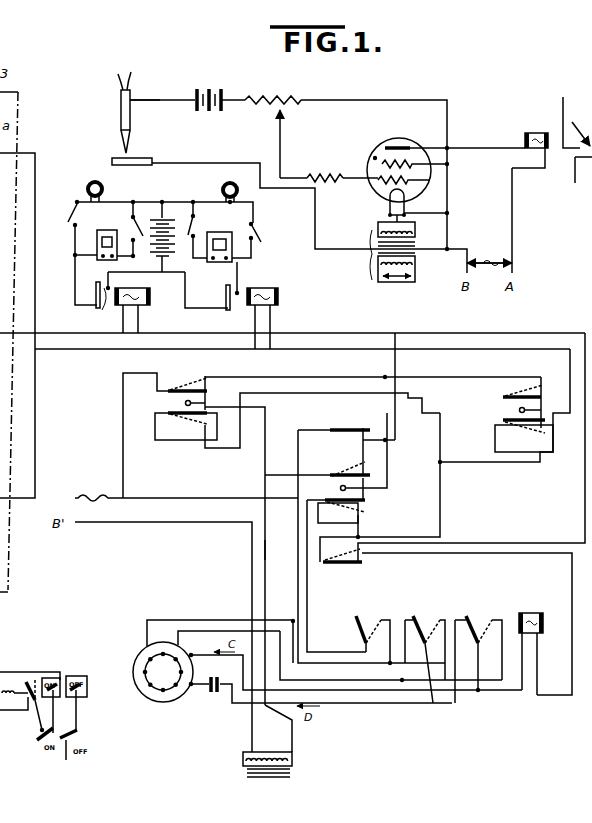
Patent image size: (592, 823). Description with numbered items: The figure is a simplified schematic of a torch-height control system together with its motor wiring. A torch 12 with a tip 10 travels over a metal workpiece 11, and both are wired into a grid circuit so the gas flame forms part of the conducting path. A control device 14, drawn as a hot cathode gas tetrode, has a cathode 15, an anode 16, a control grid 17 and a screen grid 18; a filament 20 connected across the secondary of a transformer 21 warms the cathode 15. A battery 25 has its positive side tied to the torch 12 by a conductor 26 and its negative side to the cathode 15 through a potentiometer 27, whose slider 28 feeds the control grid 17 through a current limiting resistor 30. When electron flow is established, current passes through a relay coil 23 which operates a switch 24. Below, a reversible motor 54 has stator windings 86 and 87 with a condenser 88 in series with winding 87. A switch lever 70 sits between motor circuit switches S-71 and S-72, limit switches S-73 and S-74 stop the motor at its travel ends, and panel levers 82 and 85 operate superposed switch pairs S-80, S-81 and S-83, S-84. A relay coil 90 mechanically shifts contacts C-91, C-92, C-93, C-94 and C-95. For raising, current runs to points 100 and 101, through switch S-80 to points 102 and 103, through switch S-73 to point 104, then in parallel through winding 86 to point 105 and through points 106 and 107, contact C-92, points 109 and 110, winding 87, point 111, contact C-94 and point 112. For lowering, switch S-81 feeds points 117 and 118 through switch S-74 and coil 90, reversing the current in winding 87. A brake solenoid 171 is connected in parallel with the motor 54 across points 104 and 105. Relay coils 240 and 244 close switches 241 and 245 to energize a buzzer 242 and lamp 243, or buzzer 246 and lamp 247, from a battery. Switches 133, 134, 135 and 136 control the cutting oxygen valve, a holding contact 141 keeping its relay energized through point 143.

In FIG. 1, the torch tip 10 is at (129, 148).
In FIG. 1, the workpiece 11 is at (124, 166).
In FIG. 1, the torch 12 is at (121, 118).
In FIG. 1, the control device 14 is at (380, 146).
In FIG. 1, the cathode 15 is at (388, 193).
In FIG. 1, the anode 16 is at (404, 146).
In FIG. 1, the control grid 17 is at (430, 181).
In FIG. 1, the screen grid 18 is at (380, 164).
In FIG. 1, the filament 20 is at (387, 206).
In FIG. 1, the transformer 21 is at (380, 252).
In FIG. 1, the relay coil 23 is at (535, 132).
In FIG. 1, the switch 24 is at (575, 126).
In FIG. 1, the battery 25 is at (205, 112).
In FIG. 1, the conductor 26 is at (153, 99).
In FIG. 1, the potentiometer 27 is at (256, 106).
In FIG. 1, the slider 28 is at (284, 116).
In FIG. 1, the current limiting resistor 30 is at (320, 167).
In FIG. 1, the motor 54 is at (152, 700).
In FIG. 1, the switch lever 70 is at (340, 488).
In FIG. 1, the lever 82 is at (185, 404).
In FIG. 1, the lever 85 is at (519, 410).
In FIG. 1, the stator winding 86 is at (162, 642).
In FIG. 1, the stator winding 87 is at (355, 663).
In FIG. 1, the condenser 88 is at (207, 693).
In FIG. 1, the electro-magnetic coil 90 is at (531, 612).
In FIG. 1, the point 100 is at (126, 497).
In FIG. 1, the point 101 is at (157, 388).
In FIG. 1, the point 102 is at (383, 376).
In FIG. 1, the point 103 is at (392, 442).
In FIG. 1, the point 104 is at (291, 624).
In FIG. 1, the point 105 is at (250, 630).
In FIG. 1, the point 106 is at (389, 664).
In FIG. 1, the point 107 is at (433, 703).
In FIG. 1, the point 109 is at (402, 681).
In FIG. 1, the point 110 is at (226, 683).
In FIG. 1, the point 111 is at (232, 704).
In FIG. 1, the point 112 is at (478, 692).
In FIG. 1, the point 117 is at (442, 458).
In FIG. 1, the point 118 is at (360, 536).
In FIG. 1, the solenoid 171 is at (275, 767).
In FIG. 1, the relay coil 240 is at (147, 310).
In FIG. 1, the switch 241 is at (97, 308).
In FIG. 1, the buzzer 242 is at (107, 230).
In FIG. 1, the lamp 243 is at (90, 186).
In FIG. 1, the relay coil 244 is at (278, 297).
In FIG. 1, the switch 245 is at (226, 298).
In FIG. 1, the buzzer 246 is at (222, 232).
In FIG. 1, the lamp 247 is at (226, 186).
In FIG. 1, the upper switch S-80 is at (185, 384).
In FIG. 1, the lower switch S-81 is at (186, 426).
In FIG. 1, the switch S-83 is at (523, 390).
In FIG. 1, the switch S-84 is at (524, 431).
In FIG. 1, the limit switch S-73 is at (334, 444).
In FIG. 1, the motor circuit switch S-71 is at (343, 466).
In FIG. 1, the motor circuit switch S-72 is at (341, 518).
In FIG. 1, the limit switch S-74 is at (342, 568).
In FIG. 1, the contact C-91 is at (356, 631).
In FIG. 1, the contact C-92 is at (380, 618).
In FIG. 1, the contact C-93 is at (418, 618).
In FIG. 1, the contact C-94 is at (464, 618).
In FIG. 1, the contact C-95 is at (494, 618).
In FIG. 8, the switch 133 is at (59, 694).
In FIG. 8, the switch 134 is at (83, 691).
In FIG. 8, the switch 135 is at (34, 742).
In FIG. 8, the switch 136 is at (74, 736).
In FIG. 8, the contact 141 is at (31, 678).
In FIG. 8, the point 143 is at (30, 720).